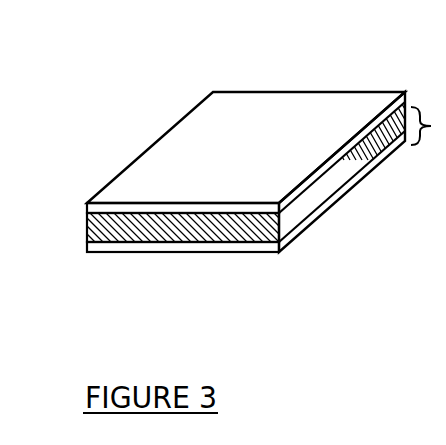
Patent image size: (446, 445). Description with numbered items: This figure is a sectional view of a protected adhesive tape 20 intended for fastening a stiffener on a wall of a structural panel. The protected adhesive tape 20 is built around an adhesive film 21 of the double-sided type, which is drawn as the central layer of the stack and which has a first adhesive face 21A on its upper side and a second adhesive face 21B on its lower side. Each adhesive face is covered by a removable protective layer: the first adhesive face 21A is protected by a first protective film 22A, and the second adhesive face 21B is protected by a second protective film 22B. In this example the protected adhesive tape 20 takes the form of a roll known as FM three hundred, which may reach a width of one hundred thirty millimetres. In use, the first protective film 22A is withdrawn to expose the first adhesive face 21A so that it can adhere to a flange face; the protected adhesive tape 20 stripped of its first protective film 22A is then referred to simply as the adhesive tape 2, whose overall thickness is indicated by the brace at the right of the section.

The protected adhesive tape 20 is at (318, 77).
The adhesive film 21 is at (133, 225).
The first adhesive face 21A is at (218, 208).
The second adhesive face 21B is at (219, 247).
The first protective film 22A is at (124, 210).
The second protective film 22B is at (185, 246).
The adhesive tape 2 is at (428, 126).